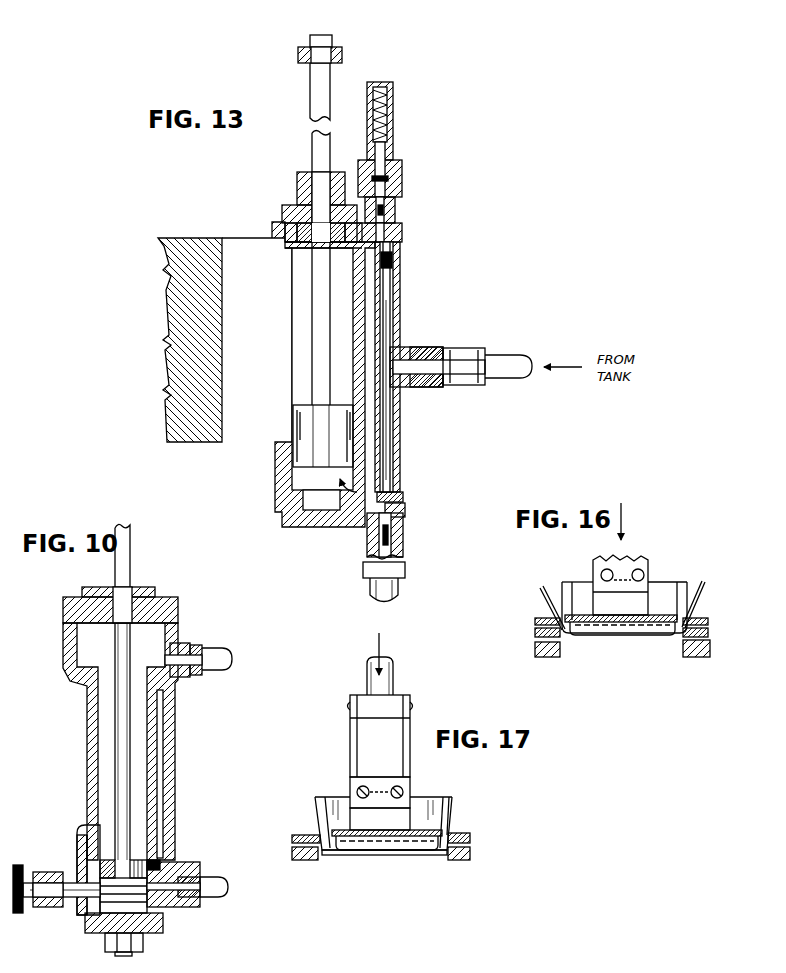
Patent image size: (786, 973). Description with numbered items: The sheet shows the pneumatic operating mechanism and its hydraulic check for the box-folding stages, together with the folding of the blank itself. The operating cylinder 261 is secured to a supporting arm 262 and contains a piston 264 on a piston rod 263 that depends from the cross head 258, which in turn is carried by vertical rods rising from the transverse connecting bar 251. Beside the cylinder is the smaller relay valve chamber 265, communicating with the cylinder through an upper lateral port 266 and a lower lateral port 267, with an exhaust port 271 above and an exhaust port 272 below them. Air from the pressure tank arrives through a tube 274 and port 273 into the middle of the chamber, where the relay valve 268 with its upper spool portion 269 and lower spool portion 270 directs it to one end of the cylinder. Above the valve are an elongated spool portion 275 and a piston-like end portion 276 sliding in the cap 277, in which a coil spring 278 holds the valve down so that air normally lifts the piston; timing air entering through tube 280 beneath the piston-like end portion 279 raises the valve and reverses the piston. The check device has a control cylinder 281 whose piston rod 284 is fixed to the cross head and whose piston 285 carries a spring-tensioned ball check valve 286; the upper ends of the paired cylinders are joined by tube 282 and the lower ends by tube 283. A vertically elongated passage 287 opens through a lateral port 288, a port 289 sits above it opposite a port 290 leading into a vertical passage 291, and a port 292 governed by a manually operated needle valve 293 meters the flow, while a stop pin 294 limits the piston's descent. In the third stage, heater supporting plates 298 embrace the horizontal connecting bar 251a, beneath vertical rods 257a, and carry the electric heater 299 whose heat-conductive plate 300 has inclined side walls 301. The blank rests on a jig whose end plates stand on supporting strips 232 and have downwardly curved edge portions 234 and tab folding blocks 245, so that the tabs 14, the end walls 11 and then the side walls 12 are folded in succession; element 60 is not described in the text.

In FIG. 13, the cross head 258 is at (343, 57).
In FIG. 13, the piston rod 263 is at (313, 99).
In FIG. 13, the cap 277 is at (383, 111).
In FIG. 13, the coil spring 278 is at (377, 118).
In FIG. 13, the piston-like end portion 276 is at (382, 157).
In FIG. 13, the elongated spool portion 275 is at (397, 204).
In FIG. 13, the exhaust port 271 is at (399, 237).
In FIG. 13, the upper spool portion 269 is at (395, 259).
In FIG. 13, the upper lateral port 266 is at (362, 248).
In FIG. 13, the relay valve chamber 265 is at (386, 302).
In FIG. 13, the port 273 is at (403, 360).
In FIG. 13, the tube 274 is at (508, 359).
In FIG. 13, the relay valve 268 is at (382, 425).
In FIG. 13, the lower lateral port 267 is at (382, 468).
In FIG. 13, the lower spool portion 270 is at (396, 495).
In FIG. 13, the exhaust port 272 is at (400, 512).
In FIG. 13, the piston-like end portion 279 is at (396, 541).
In FIG. 13, the tube 280 is at (381, 592).
In FIG. 13, the supporting arm 262 is at (209, 433).
In FIG. 13, the piston 264 is at (305, 456).
In FIG. 13, the operating cylinder 261 is at (279, 478).
In FIG. 10, the piston rod 284 is at (121, 568).
In FIG. 10, the tube 282 is at (213, 653).
In FIG. 10, the control cylinder 281 is at (176, 720).
In FIG. 10, the vertically elongated passage 287 is at (161, 755).
In FIG. 10, the piston 285 is at (133, 858).
In FIG. 10, the port 289 is at (153, 841).
In FIG. 10, the lateral port 288 is at (158, 864).
In FIG. 10, the tube 283 is at (211, 883).
In FIG. 10, the port 290 is at (96, 833).
In FIG. 10, the vertical passage 291 is at (85, 840).
In FIG. 10, the spring-tensioned ball check valve 286 is at (103, 866).
In FIG. 10, the needle valve 293 is at (54, 907).
In FIG. 10, the port 292 is at (95, 923).
In FIG. 10, the stop pin 294 is at (168, 906).
In FIG. 10, the transverse connecting bar 251 is at (152, 934).
In FIG. 16, the heater supporting plates 298 is at (640, 558).
In FIG. 16, the end walls 11 is at (574, 590).
In FIG. 17, the end walls 11 is at (422, 800).
In FIG. 16, the plate 300 is at (606, 626).
In FIG. 17, the plate 300 is at (347, 842).
In FIG. 16, the inclined side walls 301 is at (575, 636).
In FIG. 17, the inclined side walls 301 is at (432, 846).
In FIG. 16, the downwardly curved edge portion 234 is at (709, 632).
In FIG. 17, the downwardly curved edge portion 234 is at (300, 834).
In FIG. 16, the supporting strips 232 is at (700, 660).
In FIG. 17, the supporting strips 232 is at (300, 860).
In FIG. 16, the tab folding blocks 245 is at (700, 616).
In FIG. 17, the vertical rods 257a is at (383, 680).
In FIG. 17, the horizontal connecting bar 251a is at (390, 704).
In FIG. 17, the electric heater 299 is at (355, 797).
In FIG. 17, the tabs 14 is at (440, 800).
In FIG. 17, the side walls 12 is at (452, 815).
In FIG. 17, the base plate 60 is at (376, 857).